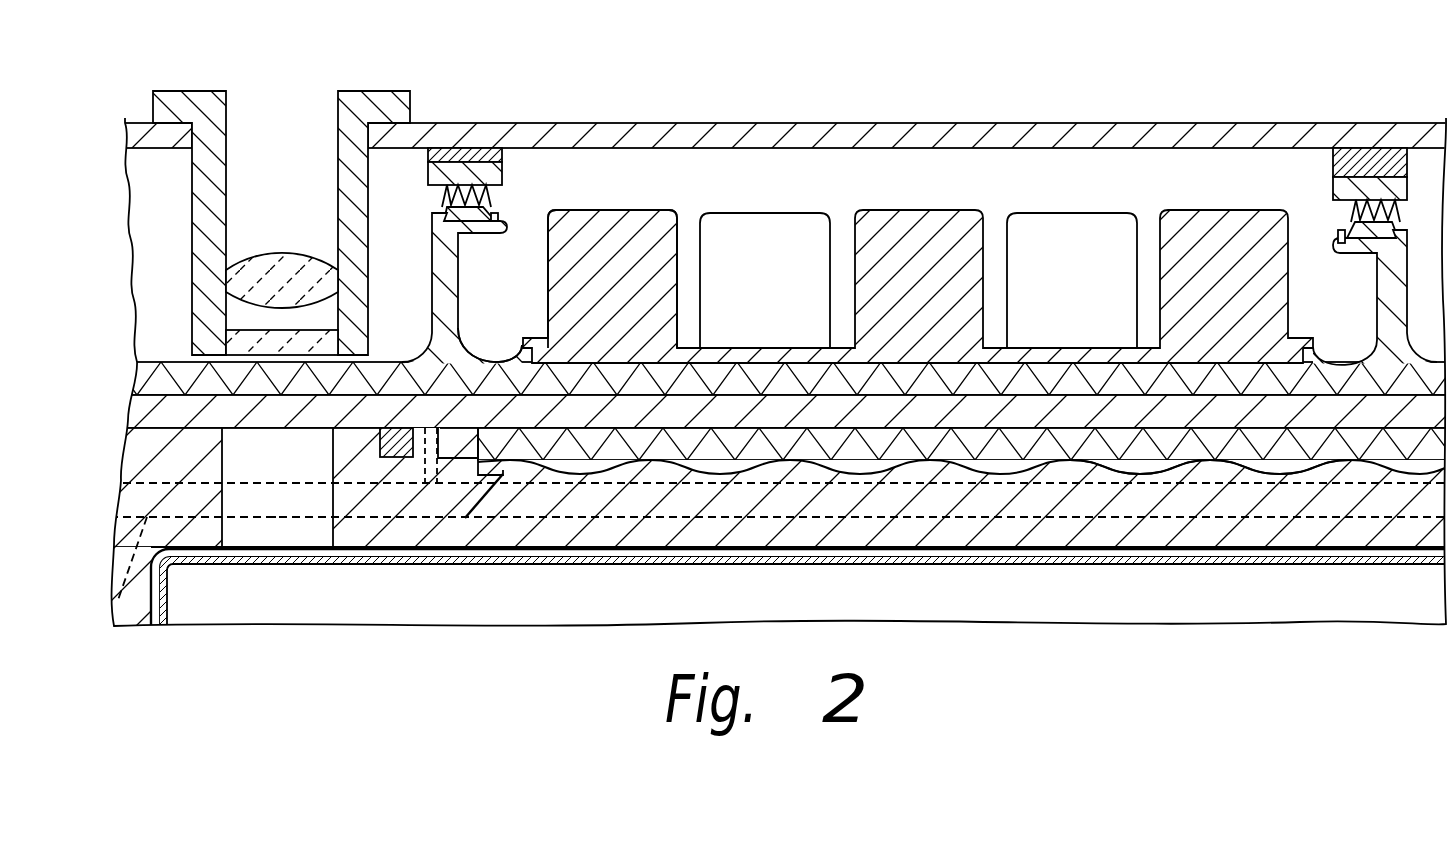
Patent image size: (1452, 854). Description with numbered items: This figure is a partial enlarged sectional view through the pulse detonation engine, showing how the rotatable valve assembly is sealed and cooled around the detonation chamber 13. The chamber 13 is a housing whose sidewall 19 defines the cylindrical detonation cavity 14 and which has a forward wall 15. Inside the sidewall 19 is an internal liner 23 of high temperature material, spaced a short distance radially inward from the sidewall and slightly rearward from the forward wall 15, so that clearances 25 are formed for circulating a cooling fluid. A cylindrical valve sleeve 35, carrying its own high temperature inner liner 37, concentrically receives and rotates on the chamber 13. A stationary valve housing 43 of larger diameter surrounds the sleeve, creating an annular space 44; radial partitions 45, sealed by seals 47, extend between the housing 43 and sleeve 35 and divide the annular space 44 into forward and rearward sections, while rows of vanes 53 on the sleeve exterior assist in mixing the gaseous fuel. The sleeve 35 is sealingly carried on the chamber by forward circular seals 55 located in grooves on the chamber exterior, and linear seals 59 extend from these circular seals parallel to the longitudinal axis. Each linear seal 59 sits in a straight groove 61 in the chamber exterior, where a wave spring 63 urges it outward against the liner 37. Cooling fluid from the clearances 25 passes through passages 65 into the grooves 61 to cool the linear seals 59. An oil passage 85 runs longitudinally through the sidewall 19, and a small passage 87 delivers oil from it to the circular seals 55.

The detonation chamber 13 is at (598, 522).
The detonation cavity 14 is at (752, 603).
The forward wall 15 is at (138, 602).
The sidewall 19 is at (838, 540).
The internal liner 23 is at (930, 565).
The clearances 25 is at (1030, 553).
The valve sleeve 35 is at (473, 378).
The inner liner 37 is at (382, 405).
The valve housing 43 is at (678, 132).
The annular space 44 is at (846, 194).
The radial partitions 45 is at (455, 262).
The seals 47 is at (486, 206).
The vanes 53 is at (640, 222).
The forward circular seals 55 is at (387, 441).
The linear seals 59 is at (733, 410).
The straight groove 61 is at (1072, 473).
The wave spring 63 is at (1205, 465).
The passages 65 is at (478, 538).
The oil passage 85 is at (280, 512).
The small passage 87 is at (425, 462).